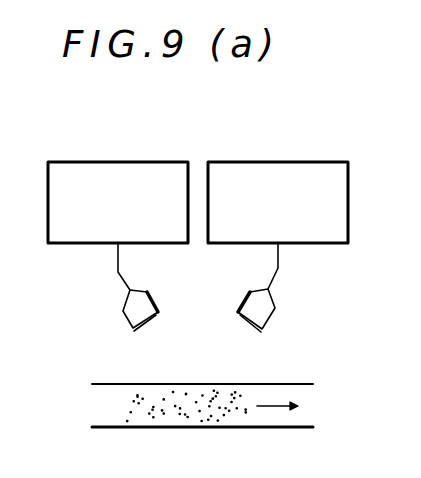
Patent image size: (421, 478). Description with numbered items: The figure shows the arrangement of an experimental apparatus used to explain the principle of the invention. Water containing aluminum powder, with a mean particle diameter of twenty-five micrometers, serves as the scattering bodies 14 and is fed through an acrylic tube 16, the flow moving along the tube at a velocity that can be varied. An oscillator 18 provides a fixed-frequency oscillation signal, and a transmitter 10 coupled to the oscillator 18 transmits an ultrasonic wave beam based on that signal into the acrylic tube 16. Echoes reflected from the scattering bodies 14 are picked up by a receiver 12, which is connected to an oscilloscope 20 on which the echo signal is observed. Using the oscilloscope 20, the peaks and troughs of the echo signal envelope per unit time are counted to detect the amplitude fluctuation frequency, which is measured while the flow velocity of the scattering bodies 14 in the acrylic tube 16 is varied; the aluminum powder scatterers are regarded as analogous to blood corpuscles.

The transmitter 10 is at (123, 311).
The receiver 12 is at (275, 308).
The scattering bodies 14 is at (152, 410).
The acrylic tube 16 is at (220, 384).
The oscillator 18 is at (150, 162).
The oscilloscope 20 is at (305, 162).